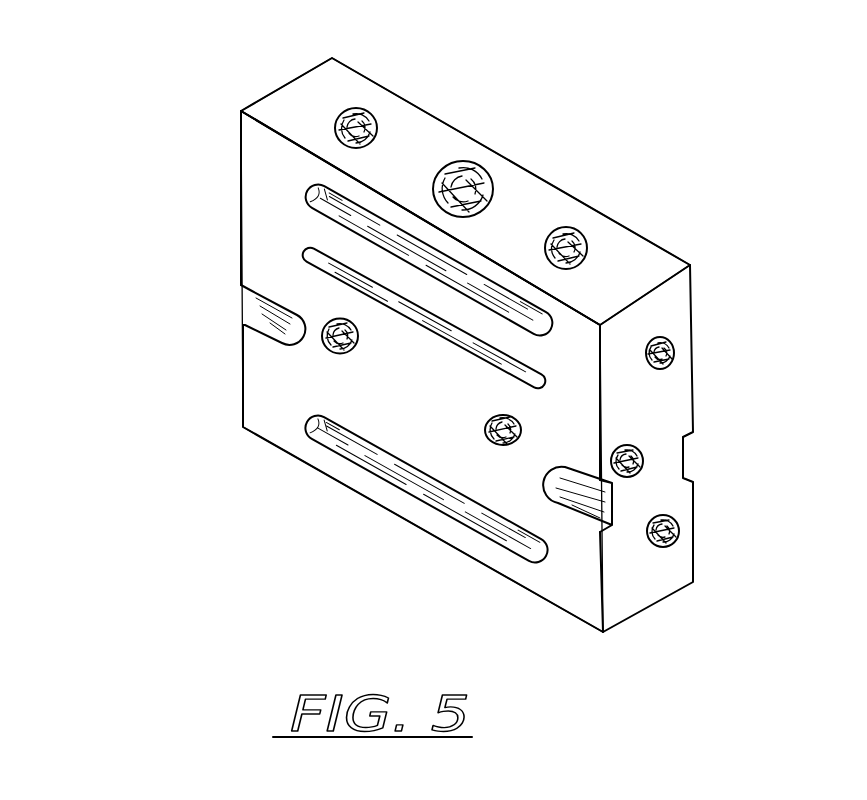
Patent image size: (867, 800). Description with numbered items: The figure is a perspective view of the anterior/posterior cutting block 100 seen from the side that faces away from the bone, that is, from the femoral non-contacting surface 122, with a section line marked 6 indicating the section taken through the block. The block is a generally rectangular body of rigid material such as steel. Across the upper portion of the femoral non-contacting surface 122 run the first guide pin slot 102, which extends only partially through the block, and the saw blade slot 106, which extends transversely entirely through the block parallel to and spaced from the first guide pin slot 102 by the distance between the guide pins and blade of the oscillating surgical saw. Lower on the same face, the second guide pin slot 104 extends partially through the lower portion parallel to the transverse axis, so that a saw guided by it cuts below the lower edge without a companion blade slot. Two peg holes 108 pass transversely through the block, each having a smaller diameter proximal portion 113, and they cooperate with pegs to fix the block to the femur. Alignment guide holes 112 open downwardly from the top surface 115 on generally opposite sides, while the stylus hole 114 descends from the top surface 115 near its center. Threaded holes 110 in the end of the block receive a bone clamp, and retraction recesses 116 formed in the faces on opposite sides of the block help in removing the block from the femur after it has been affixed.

The anterior/posterior cutting block 100 is at (267, 96).
The first guide pin slot 102 is at (305, 203).
The second guide pin slot 104 is at (317, 450).
The saw blade slot 106 is at (305, 258).
The peg holes 108 is at (486, 422).
The threaded holes 110 is at (670, 366).
The alignment guide holes 112 is at (375, 112).
The smaller diameter proximal portion 113 is at (320, 95).
The stylus hole 114 is at (472, 170).
The top surface 115 is at (536, 227).
The retraction recesses 116 is at (262, 301).
The femoral non-contacting surface 122 is at (414, 404).
The section line 6- 6 is at (692, 143).